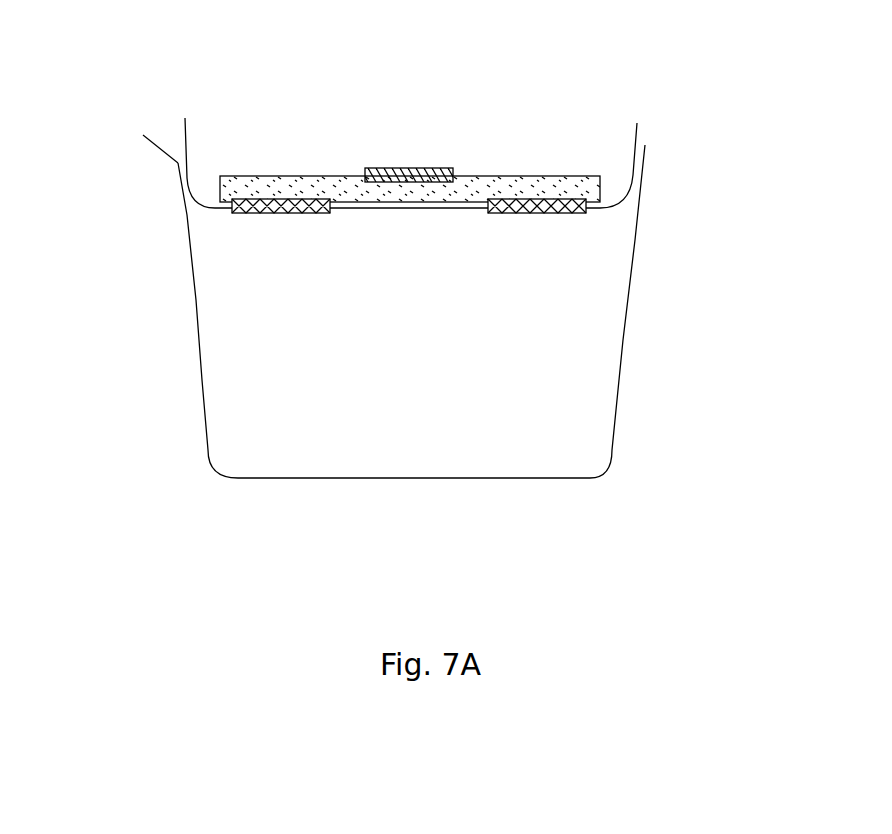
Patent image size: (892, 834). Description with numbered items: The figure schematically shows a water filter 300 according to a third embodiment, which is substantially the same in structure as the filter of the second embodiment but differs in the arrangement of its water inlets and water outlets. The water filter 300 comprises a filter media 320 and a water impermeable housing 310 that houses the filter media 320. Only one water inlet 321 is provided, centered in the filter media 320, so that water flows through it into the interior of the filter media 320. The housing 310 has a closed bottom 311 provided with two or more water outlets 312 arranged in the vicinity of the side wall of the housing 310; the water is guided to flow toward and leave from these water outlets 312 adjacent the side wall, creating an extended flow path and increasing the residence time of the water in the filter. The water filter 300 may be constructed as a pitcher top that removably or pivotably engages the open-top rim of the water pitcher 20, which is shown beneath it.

The water pitcher 20 is at (619, 383).
The water filter 300 is at (375, 174).
The water impermeable housing 310 is at (185, 133).
The closed bottom 311 is at (202, 207).
The water outlets 312 is at (280, 213).
The filter media 320 is at (263, 175).
The water inlet 321 is at (437, 168).